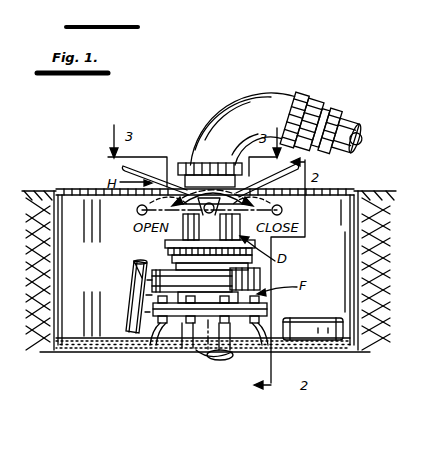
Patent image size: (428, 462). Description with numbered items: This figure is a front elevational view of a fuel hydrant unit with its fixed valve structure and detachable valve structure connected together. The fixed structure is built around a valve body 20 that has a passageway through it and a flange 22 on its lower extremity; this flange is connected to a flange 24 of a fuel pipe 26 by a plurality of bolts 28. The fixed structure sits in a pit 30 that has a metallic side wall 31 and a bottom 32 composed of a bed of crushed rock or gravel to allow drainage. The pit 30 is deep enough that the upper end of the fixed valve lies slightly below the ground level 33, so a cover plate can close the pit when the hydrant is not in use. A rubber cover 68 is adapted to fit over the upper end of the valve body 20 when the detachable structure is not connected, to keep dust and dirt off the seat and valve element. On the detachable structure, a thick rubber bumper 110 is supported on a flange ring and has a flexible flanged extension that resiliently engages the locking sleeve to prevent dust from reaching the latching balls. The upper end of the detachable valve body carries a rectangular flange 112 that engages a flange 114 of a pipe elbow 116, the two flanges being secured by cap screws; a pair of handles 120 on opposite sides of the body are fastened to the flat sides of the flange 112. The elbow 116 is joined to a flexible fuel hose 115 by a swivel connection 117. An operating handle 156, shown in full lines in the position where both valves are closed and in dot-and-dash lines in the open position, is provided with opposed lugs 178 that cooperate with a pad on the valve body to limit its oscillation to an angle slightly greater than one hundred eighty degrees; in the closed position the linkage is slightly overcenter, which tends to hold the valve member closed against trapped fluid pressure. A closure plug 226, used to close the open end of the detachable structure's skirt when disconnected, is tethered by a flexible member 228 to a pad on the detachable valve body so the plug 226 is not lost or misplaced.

The valve body 20 is at (211, 293).
The flange 22 is at (268, 308).
The flange 24 is at (241, 346).
The fuel pipe 26 is at (216, 359).
The bolts 28 is at (182, 344).
The pit 30 is at (60, 257).
The metallic side wall 31 is at (95, 272).
The bottom 32 is at (98, 349).
The ground level 33 is at (43, 189).
The cover 68 is at (336, 342).
The rubber bumper 110 is at (262, 281).
The rectangular flange 112 is at (263, 180).
The flange 114 is at (180, 163).
The flexible fuel hose 115 is at (362, 140).
The pipe elbow 116 is at (262, 100).
The swivel connection 117 is at (319, 116).
The handles 120 is at (124, 170).
The operating handle 156 is at (283, 210).
The opposed lugs 178 is at (212, 190).
The closure plug 226 is at (133, 318).
The flexible member 228 is at (136, 262).